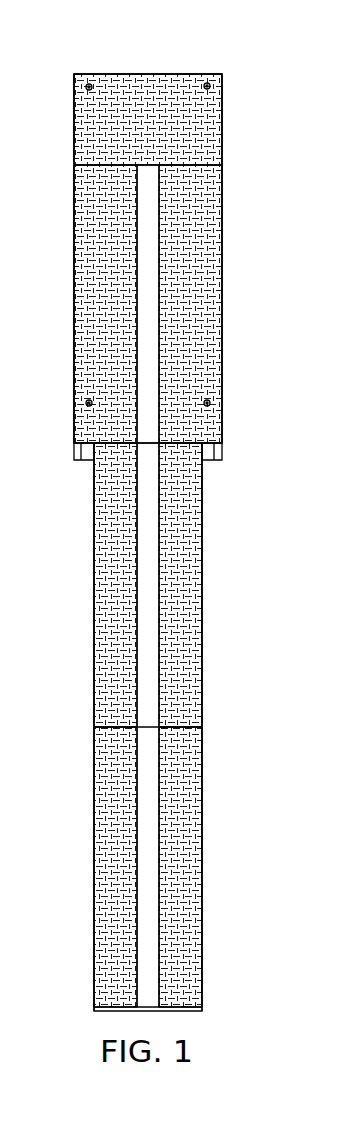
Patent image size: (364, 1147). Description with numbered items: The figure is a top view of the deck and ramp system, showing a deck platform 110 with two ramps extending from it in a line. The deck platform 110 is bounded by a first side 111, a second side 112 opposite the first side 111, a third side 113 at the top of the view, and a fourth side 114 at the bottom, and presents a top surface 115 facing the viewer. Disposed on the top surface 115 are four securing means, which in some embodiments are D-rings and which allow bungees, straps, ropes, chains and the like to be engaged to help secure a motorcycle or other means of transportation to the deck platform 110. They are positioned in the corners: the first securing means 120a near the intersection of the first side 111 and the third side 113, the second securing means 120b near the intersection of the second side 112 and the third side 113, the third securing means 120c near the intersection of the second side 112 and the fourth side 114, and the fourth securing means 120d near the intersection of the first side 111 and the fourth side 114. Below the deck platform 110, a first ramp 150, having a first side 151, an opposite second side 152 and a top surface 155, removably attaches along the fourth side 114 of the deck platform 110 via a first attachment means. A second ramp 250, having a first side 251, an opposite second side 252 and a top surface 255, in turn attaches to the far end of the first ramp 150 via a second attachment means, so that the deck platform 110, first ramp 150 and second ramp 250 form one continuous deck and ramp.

The deck platform 110 is at (208, 134).
The first side 111 is at (222, 272).
The second side 112 is at (74, 118).
The third side 113 is at (140, 74).
The fourth side 114 is at (183, 445).
The top surface 115 is at (202, 212).
The first securing means 120a is at (210, 85).
The second securing means 120b is at (86, 85).
The third securing means 120c is at (86, 401).
The fourth securing means 120d is at (210, 402).
The first ramp 150 is at (202, 612).
The first side 151 is at (202, 540).
The second side 152 is at (94, 580).
The top surface 155 is at (188, 638).
The second ramp 250 is at (202, 800).
The first side 251 is at (202, 846).
The second side 252 is at (94, 798).
The top surface 255 is at (118, 875).